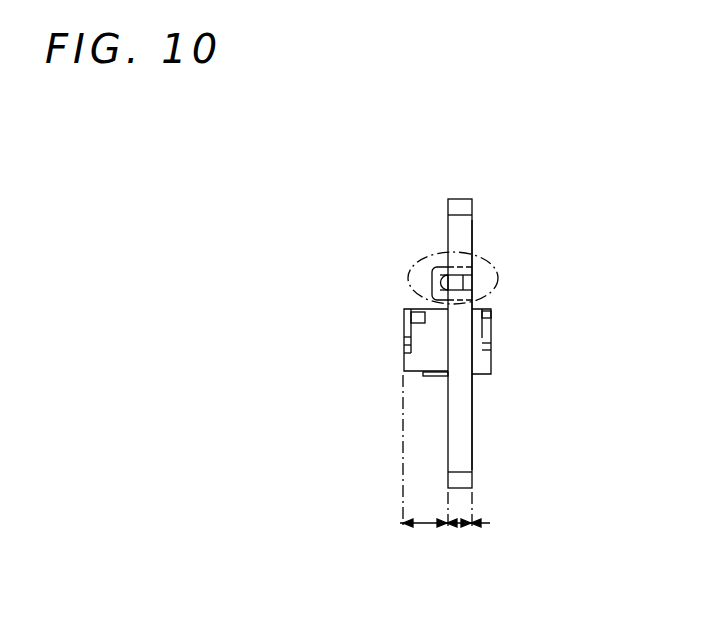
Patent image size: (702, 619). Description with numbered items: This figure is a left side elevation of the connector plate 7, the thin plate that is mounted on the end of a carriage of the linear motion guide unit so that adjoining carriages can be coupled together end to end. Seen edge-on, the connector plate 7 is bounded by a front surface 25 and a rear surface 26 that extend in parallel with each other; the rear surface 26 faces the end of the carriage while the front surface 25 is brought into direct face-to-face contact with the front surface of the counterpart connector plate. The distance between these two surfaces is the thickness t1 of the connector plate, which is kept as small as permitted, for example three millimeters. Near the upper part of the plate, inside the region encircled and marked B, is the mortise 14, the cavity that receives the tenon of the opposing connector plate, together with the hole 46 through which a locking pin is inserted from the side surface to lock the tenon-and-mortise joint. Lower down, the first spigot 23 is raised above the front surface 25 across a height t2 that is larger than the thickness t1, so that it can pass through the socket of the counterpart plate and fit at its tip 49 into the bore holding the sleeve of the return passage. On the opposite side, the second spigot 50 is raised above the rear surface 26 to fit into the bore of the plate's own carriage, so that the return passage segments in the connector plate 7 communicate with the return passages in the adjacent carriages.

The connector plate 7 is at (498, 207).
The mortise 14 is at (438, 266).
The hole 46 is at (440, 282).
The detail region B is at (497, 266).
The tip of first spigot 49 is at (403, 355).
The first spigot 23 is at (428, 357).
The second spigot 50 is at (485, 363).
The front surface 25 is at (447, 428).
The rear surface 26 is at (472, 427).
The thickness of connector plate t1 is at (457, 526).
The height of first spigot t2 is at (423, 525).